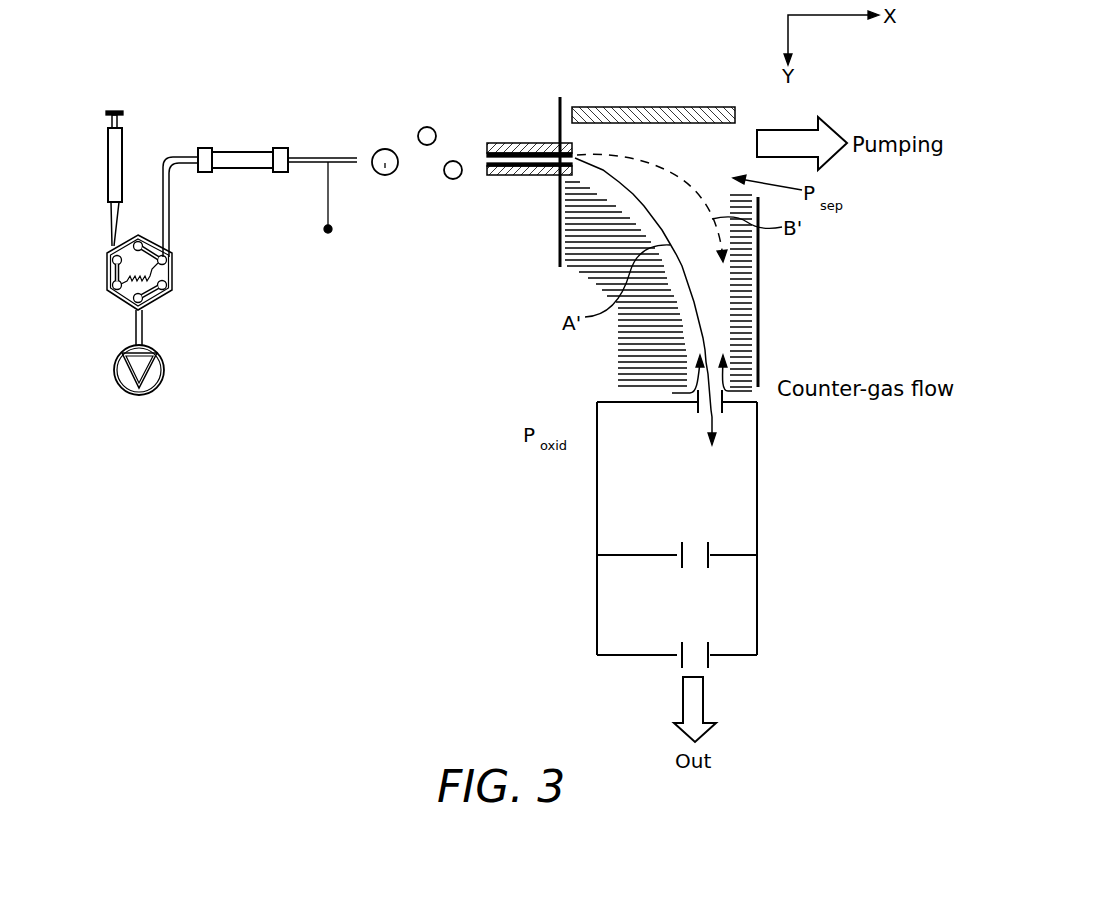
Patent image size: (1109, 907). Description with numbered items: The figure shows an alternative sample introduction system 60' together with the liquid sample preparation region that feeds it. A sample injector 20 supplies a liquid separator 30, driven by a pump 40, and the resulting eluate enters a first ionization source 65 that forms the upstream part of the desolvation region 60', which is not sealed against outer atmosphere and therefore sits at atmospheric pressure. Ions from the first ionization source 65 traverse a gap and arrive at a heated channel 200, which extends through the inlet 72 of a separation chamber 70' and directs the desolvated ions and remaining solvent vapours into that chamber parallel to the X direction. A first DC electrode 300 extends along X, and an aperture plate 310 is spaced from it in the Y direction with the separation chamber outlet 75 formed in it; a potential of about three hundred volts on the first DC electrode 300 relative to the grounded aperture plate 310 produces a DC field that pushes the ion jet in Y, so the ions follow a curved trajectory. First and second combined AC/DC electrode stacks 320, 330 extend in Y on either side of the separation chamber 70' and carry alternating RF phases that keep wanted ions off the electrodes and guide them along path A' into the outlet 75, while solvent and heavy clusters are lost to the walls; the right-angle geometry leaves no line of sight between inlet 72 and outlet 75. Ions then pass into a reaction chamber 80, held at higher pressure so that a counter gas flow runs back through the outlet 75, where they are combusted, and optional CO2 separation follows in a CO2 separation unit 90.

The sample injector 20 is at (107, 150).
The liquid separator 30 is at (245, 148).
The pump 40 is at (167, 367).
The sample introduction system / desolvation region 60' is at (431, 45).
The first ionization source 65 is at (355, 155).
The separation chamber 70' is at (773, 291).
The separation chamber inlet 72 is at (582, 156).
The separation chamber outlet 75 is at (697, 410).
The reaction chamber 80 is at (748, 512).
The CO2 separation unit 90 is at (748, 610).
The heated channel 200 is at (500, 143).
The first DC electrode 300 is at (727, 107).
The aperture plate 310 is at (622, 398).
The first combined AC/DC electrode stack 320 is at (758, 333).
The second combined AC/DC electrode stack 330 is at (559, 243).